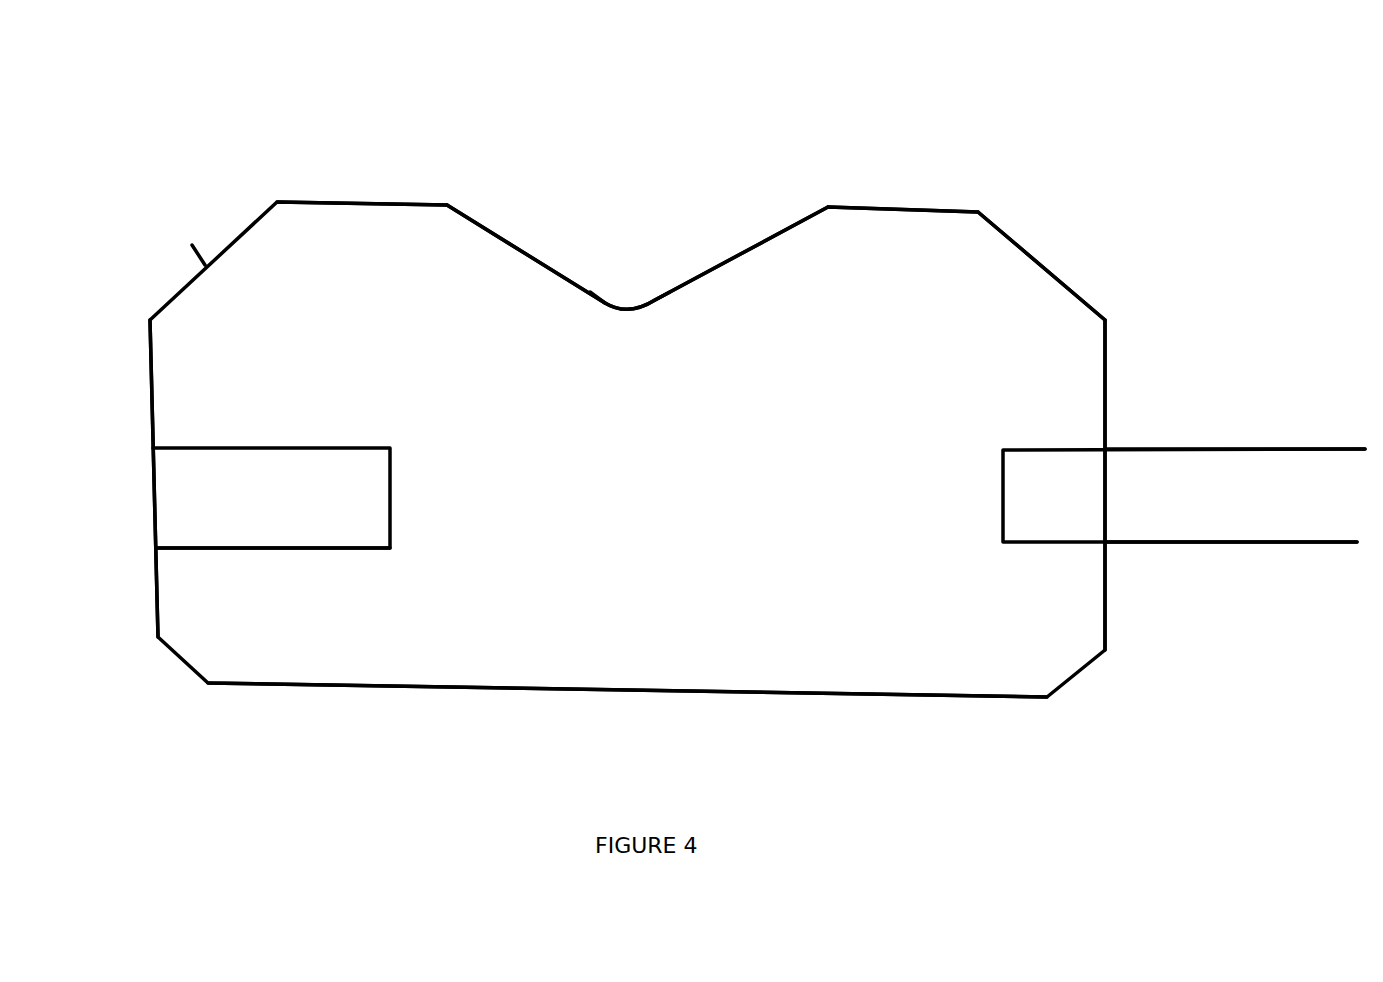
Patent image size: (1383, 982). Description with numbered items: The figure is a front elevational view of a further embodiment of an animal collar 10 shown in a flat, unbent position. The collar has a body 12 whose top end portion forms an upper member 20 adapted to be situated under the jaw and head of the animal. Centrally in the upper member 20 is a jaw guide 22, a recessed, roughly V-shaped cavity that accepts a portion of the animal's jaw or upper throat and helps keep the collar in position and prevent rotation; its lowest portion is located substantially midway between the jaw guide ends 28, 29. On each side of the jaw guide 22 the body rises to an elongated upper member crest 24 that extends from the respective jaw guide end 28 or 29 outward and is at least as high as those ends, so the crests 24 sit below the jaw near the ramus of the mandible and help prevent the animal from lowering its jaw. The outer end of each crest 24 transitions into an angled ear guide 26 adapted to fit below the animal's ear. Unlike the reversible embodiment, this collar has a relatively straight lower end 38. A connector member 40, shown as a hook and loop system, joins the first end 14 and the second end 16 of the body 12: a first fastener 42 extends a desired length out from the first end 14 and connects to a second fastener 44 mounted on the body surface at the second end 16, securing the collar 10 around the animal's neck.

The animal collar 10 is at (123, 176).
The body 12 is at (627, 449).
The first end 14 is at (1102, 378).
The second end 16 is at (155, 392).
The upper member 20 is at (855, 168).
The jaw guide 22 is at (625, 307).
The upper member crest 24 is at (352, 203).
The ear guide 26 is at (1045, 270).
The jaw guide end 28 is at (450, 205).
The jaw guide end 29 is at (827, 207).
The lower end 38 is at (507, 690).
The connector member 40 is at (170, 507).
The first fastener 42 is at (1160, 463).
The second fastener 44 is at (200, 533).